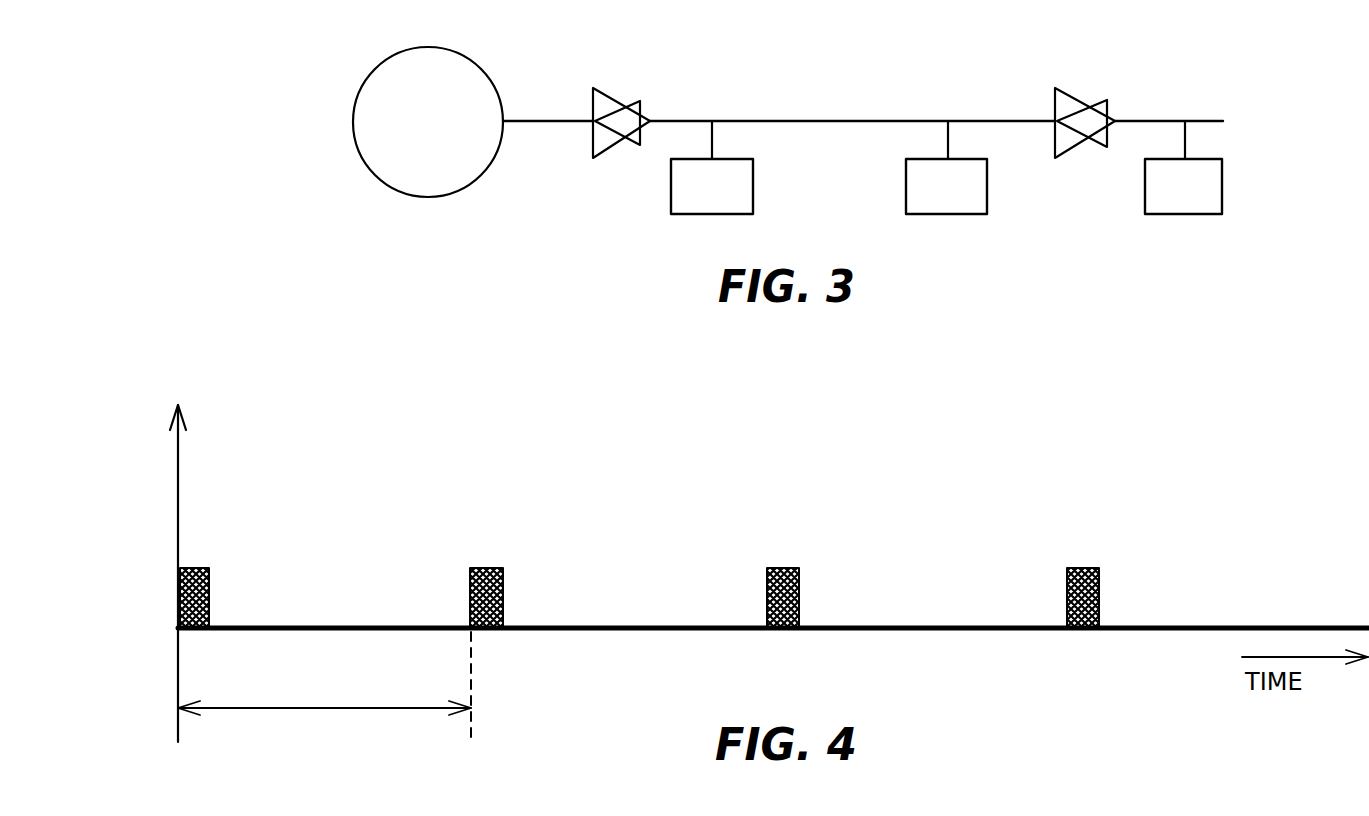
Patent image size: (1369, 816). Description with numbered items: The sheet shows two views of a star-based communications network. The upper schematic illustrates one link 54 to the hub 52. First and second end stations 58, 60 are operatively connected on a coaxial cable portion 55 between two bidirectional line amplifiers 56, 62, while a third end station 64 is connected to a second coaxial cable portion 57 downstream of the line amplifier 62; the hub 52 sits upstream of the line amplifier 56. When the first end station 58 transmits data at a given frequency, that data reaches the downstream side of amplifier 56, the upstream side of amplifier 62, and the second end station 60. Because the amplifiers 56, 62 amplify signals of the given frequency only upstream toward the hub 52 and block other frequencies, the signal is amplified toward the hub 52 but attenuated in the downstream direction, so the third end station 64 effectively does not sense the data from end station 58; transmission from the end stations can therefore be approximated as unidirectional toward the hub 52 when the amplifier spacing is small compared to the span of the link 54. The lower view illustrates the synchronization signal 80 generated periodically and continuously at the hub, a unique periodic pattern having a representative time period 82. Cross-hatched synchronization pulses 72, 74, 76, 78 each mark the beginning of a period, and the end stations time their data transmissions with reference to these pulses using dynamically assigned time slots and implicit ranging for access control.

In FIG. 3, the hub 52 is at (445, 141).
In FIG. 3, the link 54 is at (543, 121).
In FIG. 3, the coaxial cable portion 55 is at (857, 120).
In FIG. 3, the bidirectional line amplifier 56 is at (644, 99).
In FIG. 3, the second coaxial cable portion 57 is at (1193, 121).
In FIG. 3, the first end station 58 is at (723, 201).
In FIG. 3, the second end station 60 is at (958, 201).
In FIG. 3, the bidirectional line amplifier 62 is at (1107, 98).
In FIG. 3, the third end station 64 is at (1195, 201).
In FIG. 4, the synchronization pulse 72 is at (212, 568).
In FIG. 4, the synchronization pulse 74 is at (502, 568).
In FIG. 4, the synchronization pulse 76 is at (798, 568).
In FIG. 4, the synchronization pulse 78 is at (1098, 568).
In FIG. 4, the synchronization signal 80 is at (932, 521).
In FIG. 4, the time period 82 is at (288, 709).